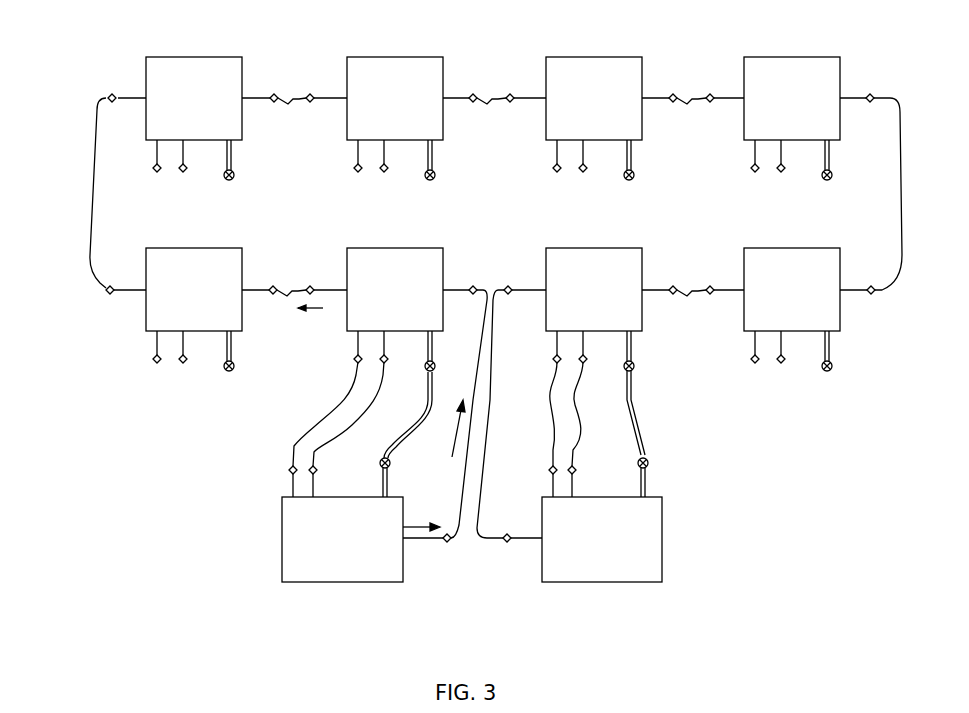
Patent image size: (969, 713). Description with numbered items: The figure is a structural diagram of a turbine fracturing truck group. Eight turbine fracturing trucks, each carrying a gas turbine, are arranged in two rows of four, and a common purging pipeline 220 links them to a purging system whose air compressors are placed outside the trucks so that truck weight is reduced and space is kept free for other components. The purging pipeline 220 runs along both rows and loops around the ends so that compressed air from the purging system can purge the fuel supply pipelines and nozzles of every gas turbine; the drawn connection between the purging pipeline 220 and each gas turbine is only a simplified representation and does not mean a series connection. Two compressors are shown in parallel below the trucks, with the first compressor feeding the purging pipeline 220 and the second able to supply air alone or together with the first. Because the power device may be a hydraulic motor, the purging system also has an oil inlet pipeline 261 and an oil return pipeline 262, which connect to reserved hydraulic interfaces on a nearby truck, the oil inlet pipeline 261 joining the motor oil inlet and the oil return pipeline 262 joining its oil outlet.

The purging pipeline 220 is at (92, 268).
The oil inlet pipeline 261 is at (316, 420).
The oil return pipeline 262 is at (318, 447).